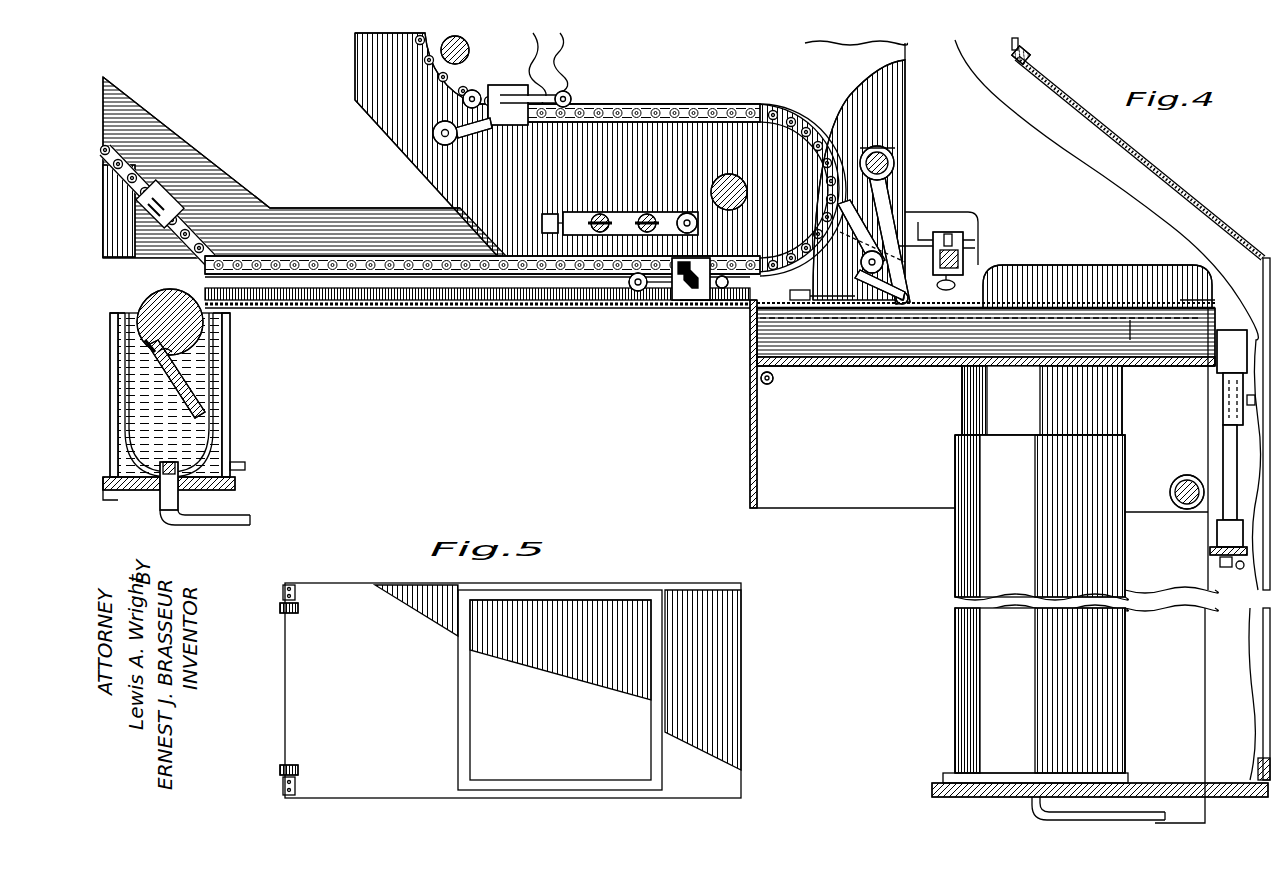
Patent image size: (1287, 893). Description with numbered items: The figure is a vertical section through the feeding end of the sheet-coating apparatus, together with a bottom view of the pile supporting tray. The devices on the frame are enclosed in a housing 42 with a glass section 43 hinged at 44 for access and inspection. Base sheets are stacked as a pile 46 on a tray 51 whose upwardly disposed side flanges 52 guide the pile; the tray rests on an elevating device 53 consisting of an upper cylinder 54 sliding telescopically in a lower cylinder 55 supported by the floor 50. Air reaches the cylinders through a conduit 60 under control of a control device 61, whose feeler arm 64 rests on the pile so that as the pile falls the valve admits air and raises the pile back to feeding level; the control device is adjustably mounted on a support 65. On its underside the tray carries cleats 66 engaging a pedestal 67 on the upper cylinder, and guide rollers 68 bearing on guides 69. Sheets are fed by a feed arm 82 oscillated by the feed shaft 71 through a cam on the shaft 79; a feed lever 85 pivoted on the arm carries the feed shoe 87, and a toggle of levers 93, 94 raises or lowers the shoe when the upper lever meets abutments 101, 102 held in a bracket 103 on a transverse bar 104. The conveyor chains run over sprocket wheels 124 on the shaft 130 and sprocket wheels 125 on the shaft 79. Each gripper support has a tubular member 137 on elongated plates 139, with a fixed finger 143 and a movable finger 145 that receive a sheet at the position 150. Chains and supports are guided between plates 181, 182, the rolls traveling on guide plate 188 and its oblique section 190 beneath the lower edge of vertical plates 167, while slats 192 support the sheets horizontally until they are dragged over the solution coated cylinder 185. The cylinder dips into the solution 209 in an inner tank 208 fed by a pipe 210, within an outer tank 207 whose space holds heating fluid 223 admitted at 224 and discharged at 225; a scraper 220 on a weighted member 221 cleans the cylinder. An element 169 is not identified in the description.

In FIG. 4, the housing 42 is at (1010, 44).
In FIG. 4, the glass section 43 is at (1188, 186).
In FIG. 4, the hinge 44 is at (1028, 56).
In FIG. 4, the pile 46 is at (870, 322).
In FIG. 4, the shelf or floor 50 is at (930, 790).
In FIG. 4, the tray 51 is at (1150, 378).
In FIG. 5, the tray 51 is at (337, 598).
In FIG. 4, the side flanges 52 is at (1100, 288).
In FIG. 4, the elevating device 53 is at (1166, 527).
In FIG. 4, the upper cylinder 54 is at (962, 414).
In FIG. 4, the lower cylinder 55 is at (955, 652).
In FIG. 4, the conduit 60 is at (1150, 806).
In FIG. 4, the control device 61 is at (1225, 350).
In FIG. 4, the feeler arm 64 is at (1185, 290).
In FIG. 4, the support 65 is at (1196, 478).
In FIG. 5, the cleats 66 is at (466, 696).
In FIG. 4, the pedestal 67 is at (935, 362).
In FIG. 4, the guide rollers 68 is at (775, 382).
In FIG. 5, the guide rollers 68 is at (298, 608).
In FIG. 4, the guides 69 is at (758, 428).
In FIG. 4, the feed shaft 71 is at (893, 158).
In FIG. 4, the cam shaft 79 is at (735, 185).
In FIG. 4, the feed arm 82 is at (903, 184).
In FIG. 4, the feed lever 85 is at (840, 294).
In FIG. 4, the feed shoe 87 is at (808, 280).
In FIG. 4, the toggle lever 93 is at (860, 272).
In FIG. 4, the toggle lever 94 is at (862, 256).
In FIG. 4, the forward abutment 101 is at (858, 238).
In FIG. 4, the rear abutment 102 is at (920, 220).
In FIG. 4, the bracket 103 is at (962, 260).
In FIG. 4, the bar 104 is at (955, 240).
In FIG. 4, the sprocket wheels 124 is at (562, 58).
In FIG. 4, the sprocket wheels 125 is at (612, 176).
In FIG. 4, the shaft 130 is at (442, 48).
In FIG. 4, the U-shaped tubular member 137 is at (640, 244).
In FIG. 4, the elongated plates 139 is at (637, 292).
In FIG. 4, the fixed gripper finger 143 is at (726, 290).
In FIG. 4, the movable gripper finger 145 is at (700, 302).
In FIG. 4, the sheet receiving position 150 is at (700, 306).
In FIG. 4, the vertical plates 167 is at (580, 102).
In FIG. 4, the fitting 169 is at (540, 218).
In FIG. 4, the guide plate 181 is at (385, 302).
In FIG. 4, the guide plate 182 is at (332, 214).
In FIG. 4, the solution coated cylinder 185 is at (140, 302).
In FIG. 4, the guide plate 188 is at (548, 310).
In FIG. 4, the oblique section 190 is at (140, 262).
In FIG. 4, the slats 192 is at (735, 312).
In FIG. 4, the outer tank 207 is at (222, 342).
In FIG. 4, the inner tank 208 is at (218, 364).
In FIG. 4, the solution of type-impressible material 209 is at (210, 388).
In FIG. 4, the supply pipe 210 is at (240, 512).
In FIG. 4, the scraper 220 is at (120, 312).
In FIG. 4, the weighted member 221 is at (214, 420).
In FIG. 4, the heating fluid 223 is at (212, 460).
In FIG. 4, the heating fluid inlet 224 is at (246, 467).
In FIG. 4, the heating fluid outlet 225 is at (116, 492).